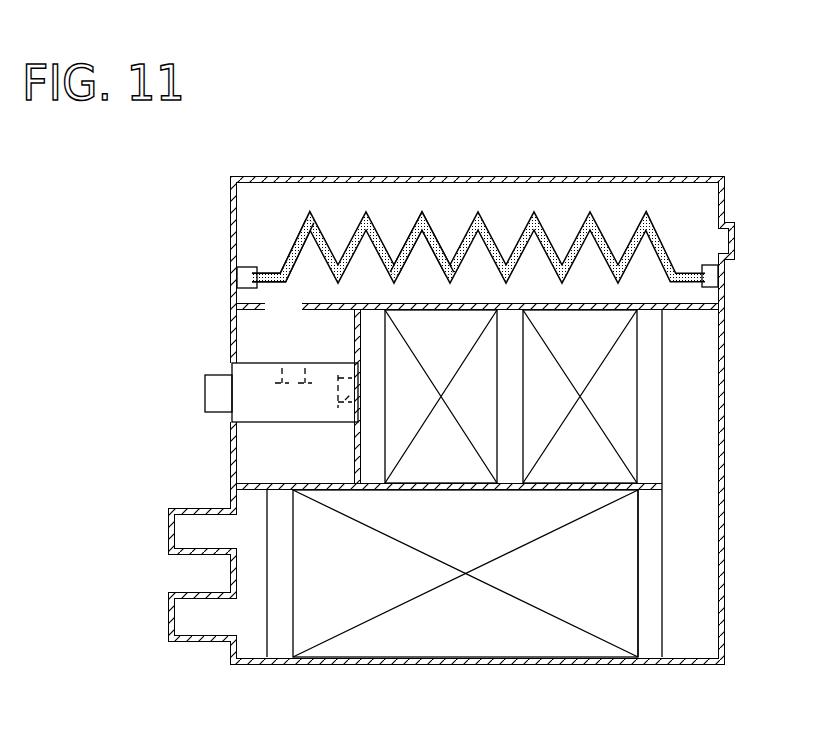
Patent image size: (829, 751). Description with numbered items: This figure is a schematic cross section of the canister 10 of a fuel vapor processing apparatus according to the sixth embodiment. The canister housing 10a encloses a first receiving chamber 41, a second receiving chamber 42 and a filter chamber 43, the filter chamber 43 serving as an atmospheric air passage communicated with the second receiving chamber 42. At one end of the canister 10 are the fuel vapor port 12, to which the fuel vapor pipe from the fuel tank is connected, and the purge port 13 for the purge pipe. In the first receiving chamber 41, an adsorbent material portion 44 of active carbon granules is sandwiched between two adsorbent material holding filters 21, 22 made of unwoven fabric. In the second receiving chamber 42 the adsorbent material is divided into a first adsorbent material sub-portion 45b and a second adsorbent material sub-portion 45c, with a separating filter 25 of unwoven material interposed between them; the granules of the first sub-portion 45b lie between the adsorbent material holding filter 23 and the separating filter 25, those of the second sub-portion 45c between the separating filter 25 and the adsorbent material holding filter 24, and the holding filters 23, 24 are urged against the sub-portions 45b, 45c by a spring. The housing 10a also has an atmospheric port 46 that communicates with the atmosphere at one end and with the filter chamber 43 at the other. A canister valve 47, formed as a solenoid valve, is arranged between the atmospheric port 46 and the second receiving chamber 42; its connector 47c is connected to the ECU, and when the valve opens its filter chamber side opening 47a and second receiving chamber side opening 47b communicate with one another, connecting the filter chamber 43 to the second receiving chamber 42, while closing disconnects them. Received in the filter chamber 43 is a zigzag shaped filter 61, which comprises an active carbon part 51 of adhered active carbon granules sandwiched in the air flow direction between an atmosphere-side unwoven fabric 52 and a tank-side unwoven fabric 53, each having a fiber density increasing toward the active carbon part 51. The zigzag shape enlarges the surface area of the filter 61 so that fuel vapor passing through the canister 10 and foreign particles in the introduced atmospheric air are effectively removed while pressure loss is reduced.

The canister 10 is at (558, 140).
The canister housing 10a is at (690, 178).
The fuel vapor port 12 is at (183, 623).
The purge port 13 is at (182, 522).
The adsorbent material holding filter 21 is at (276, 634).
The adsorbent material holding filter 22 is at (648, 592).
The adsorbent material holding filter 23 is at (652, 412).
The adsorbent material holding filter 24 is at (370, 445).
The separating filter 25 is at (510, 345).
The first receiving chamber 41 is at (408, 656).
The second receiving chamber 42 is at (548, 483).
The filter chamber 43 is at (602, 186).
The adsorbent material portion 44 is at (620, 555).
The first adsorbent material sub-portion 45b is at (607, 383).
The second adsorbent material sub-portion 45c is at (477, 407).
The atmospheric port 46 is at (736, 241).
The canister valve 47 is at (287, 363).
The filter chamber side opening 47a is at (293, 363).
The second receiving chamber side opening 47b is at (348, 405).
The connector 47c is at (203, 388).
The active carbon part 51 is at (480, 215).
The atmosphere-side unwoven fabric 52 is at (312, 219).
The tank-side unwoven fabric 53 is at (283, 280).
The filter 61 is at (433, 192).